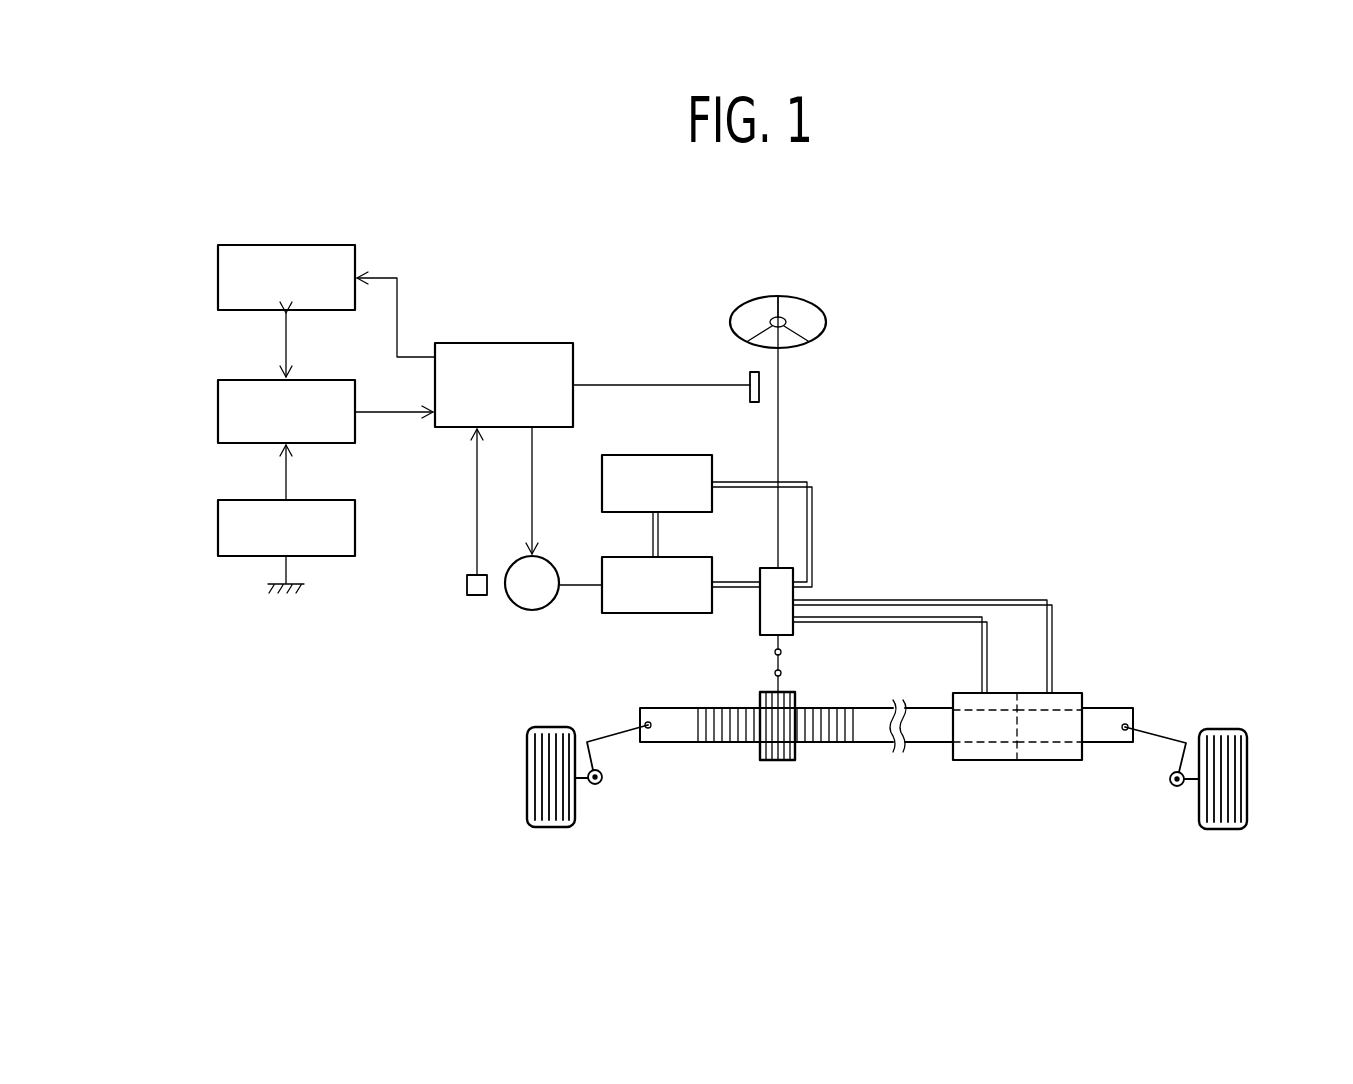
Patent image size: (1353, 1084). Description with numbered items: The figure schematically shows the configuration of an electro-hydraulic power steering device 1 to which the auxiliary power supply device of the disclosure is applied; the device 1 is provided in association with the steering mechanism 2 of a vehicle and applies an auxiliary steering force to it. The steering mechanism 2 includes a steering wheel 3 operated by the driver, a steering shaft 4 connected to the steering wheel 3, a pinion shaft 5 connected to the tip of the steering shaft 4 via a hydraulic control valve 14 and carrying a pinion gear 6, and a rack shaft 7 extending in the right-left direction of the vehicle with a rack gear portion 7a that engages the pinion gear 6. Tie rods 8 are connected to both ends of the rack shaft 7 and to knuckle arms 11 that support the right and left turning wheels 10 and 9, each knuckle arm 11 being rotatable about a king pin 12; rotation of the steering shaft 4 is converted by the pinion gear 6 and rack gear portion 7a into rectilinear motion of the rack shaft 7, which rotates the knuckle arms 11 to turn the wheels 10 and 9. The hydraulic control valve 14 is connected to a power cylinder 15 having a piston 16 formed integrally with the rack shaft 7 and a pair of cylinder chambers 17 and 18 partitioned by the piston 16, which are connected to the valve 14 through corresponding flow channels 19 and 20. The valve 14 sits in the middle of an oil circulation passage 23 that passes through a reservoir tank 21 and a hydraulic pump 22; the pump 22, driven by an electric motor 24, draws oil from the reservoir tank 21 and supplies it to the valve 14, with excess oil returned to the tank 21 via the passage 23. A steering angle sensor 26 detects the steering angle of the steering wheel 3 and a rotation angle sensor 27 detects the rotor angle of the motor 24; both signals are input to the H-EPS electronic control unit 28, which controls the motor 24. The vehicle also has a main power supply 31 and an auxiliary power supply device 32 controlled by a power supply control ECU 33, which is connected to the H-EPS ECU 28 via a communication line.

The electro-hydraulic power steering device 1 is at (818, 297).
The steering mechanism 2 is at (886, 756).
The steering wheel 3 is at (826, 322).
The steering shaft 4 is at (779, 373).
The pinion shaft 5 is at (784, 662).
The pinion gear 6 is at (778, 760).
The rack shaft 7 is at (871, 742).
The rack gear portion 7a is at (726, 742).
The tie rods 8 is at (617, 740).
The left turning wheel 9 is at (549, 827).
The right turning wheel 10 is at (1225, 829).
The knuckle arms 11 is at (594, 785).
The king pin 12 is at (600, 784).
The hydraulic control valve 14 is at (758, 616).
The power cylinder 15 is at (1025, 725).
The piston 16 is at (1015, 745).
The cylinder chamber 17 is at (980, 760).
The cylinder chamber 18 is at (1062, 760).
The flow channel 19 is at (920, 628).
The flow channel 20 is at (937, 600).
The reservoir tank 21 is at (682, 455).
The hydraulic pump 22 is at (640, 613).
The oil circulation passage 23 is at (812, 556).
The electric motor 24 is at (530, 611).
The steering angle sensor 26 is at (750, 378).
The rotation angle sensor 27 is at (467, 585).
The H-EPS electronic control unit 28 is at (510, 343).
The main power supply 31 is at (218, 527).
The auxiliary power supply device 32 is at (218, 412).
The power supply control ECU 33 is at (218, 279).